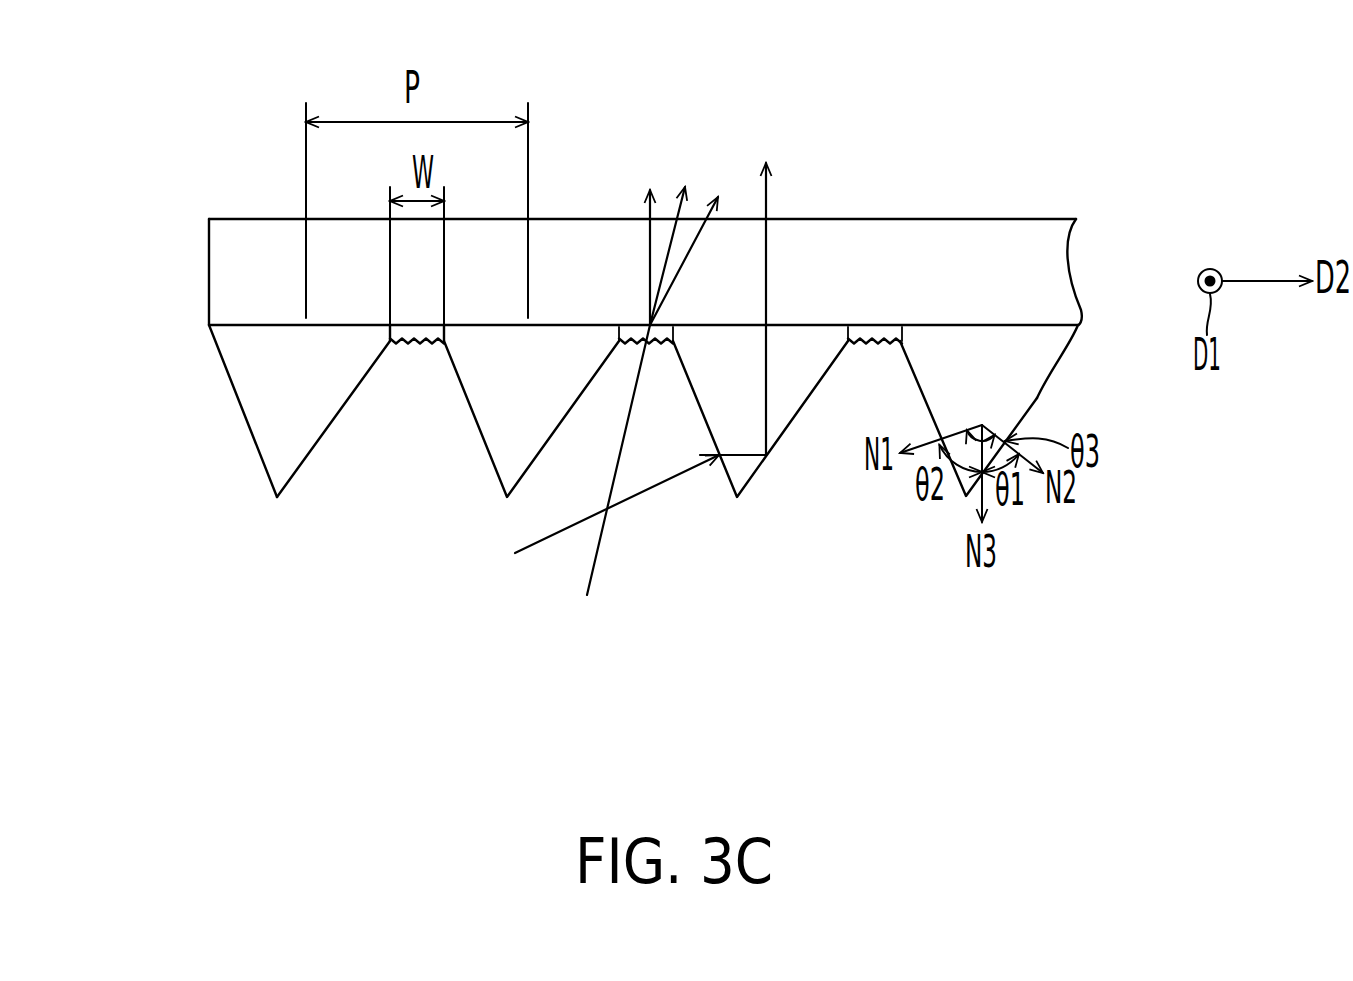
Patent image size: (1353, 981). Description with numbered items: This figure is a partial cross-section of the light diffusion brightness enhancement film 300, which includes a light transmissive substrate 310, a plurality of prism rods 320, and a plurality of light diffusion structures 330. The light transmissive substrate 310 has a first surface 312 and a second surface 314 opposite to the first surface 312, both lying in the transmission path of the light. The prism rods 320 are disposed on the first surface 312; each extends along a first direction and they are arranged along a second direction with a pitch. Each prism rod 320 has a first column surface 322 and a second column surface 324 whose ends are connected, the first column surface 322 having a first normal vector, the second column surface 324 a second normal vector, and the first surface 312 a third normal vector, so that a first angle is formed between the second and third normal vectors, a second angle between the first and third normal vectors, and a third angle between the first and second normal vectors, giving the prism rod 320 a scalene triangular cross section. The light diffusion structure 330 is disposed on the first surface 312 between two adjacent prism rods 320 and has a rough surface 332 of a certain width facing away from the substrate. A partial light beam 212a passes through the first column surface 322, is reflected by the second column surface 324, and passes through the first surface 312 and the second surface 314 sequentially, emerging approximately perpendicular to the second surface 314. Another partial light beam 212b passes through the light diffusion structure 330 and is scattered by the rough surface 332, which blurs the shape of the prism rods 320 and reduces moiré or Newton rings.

The light diffusion brightness enhancement film 300 is at (623, 383).
The light transmissive substrate 310 is at (617, 270).
The first surface 312 is at (1030, 328).
The second surface 314 is at (982, 218).
The prism rods 320 is at (572, 445).
The first column surface 322 is at (248, 445).
The second column surface 324 is at (318, 445).
The light diffusion structure 330 is at (409, 347).
The rough surface 332 is at (431, 347).
The partial light beam 212a is at (532, 547).
The partial light beam 212b is at (600, 557).